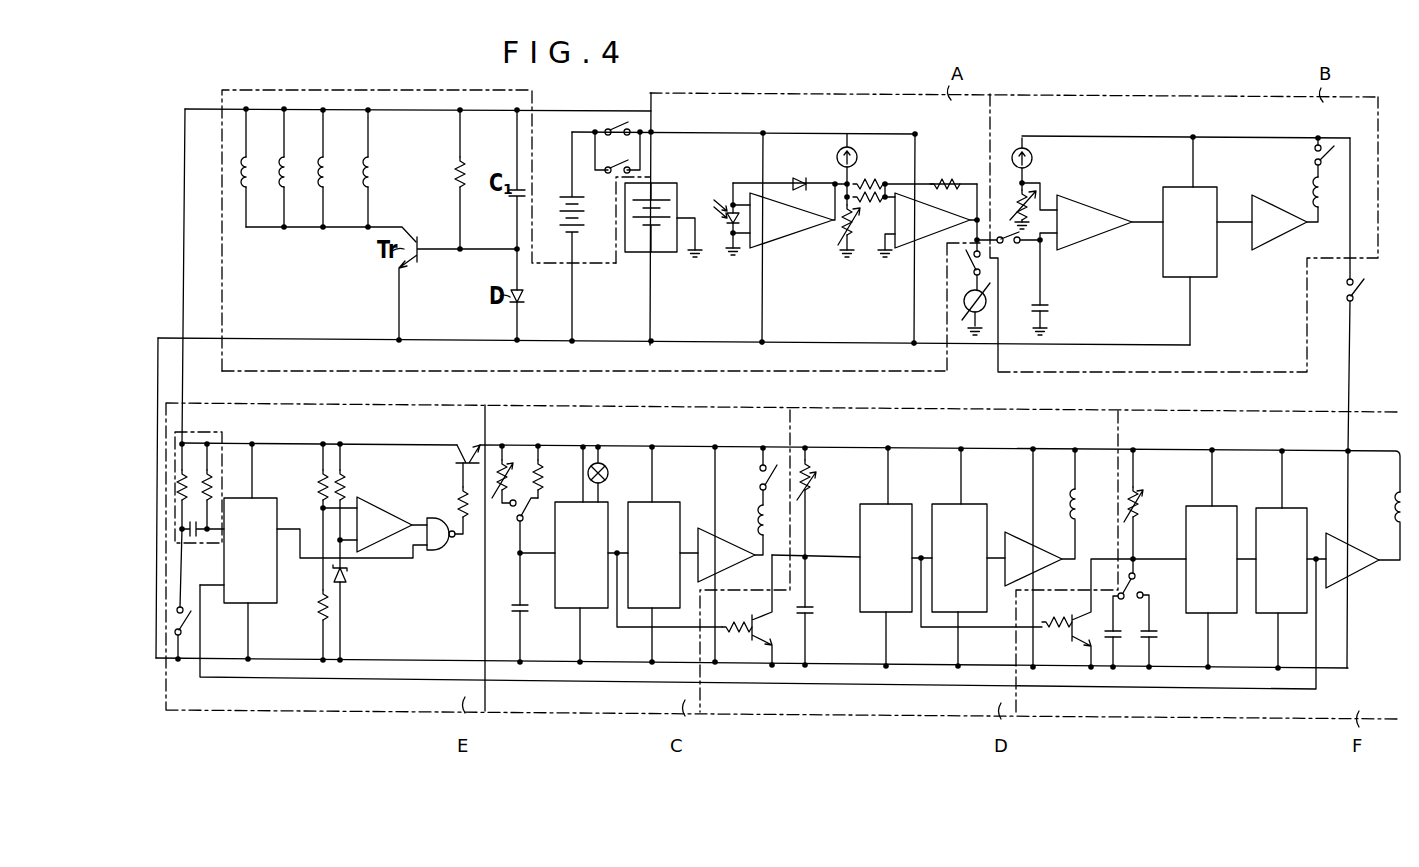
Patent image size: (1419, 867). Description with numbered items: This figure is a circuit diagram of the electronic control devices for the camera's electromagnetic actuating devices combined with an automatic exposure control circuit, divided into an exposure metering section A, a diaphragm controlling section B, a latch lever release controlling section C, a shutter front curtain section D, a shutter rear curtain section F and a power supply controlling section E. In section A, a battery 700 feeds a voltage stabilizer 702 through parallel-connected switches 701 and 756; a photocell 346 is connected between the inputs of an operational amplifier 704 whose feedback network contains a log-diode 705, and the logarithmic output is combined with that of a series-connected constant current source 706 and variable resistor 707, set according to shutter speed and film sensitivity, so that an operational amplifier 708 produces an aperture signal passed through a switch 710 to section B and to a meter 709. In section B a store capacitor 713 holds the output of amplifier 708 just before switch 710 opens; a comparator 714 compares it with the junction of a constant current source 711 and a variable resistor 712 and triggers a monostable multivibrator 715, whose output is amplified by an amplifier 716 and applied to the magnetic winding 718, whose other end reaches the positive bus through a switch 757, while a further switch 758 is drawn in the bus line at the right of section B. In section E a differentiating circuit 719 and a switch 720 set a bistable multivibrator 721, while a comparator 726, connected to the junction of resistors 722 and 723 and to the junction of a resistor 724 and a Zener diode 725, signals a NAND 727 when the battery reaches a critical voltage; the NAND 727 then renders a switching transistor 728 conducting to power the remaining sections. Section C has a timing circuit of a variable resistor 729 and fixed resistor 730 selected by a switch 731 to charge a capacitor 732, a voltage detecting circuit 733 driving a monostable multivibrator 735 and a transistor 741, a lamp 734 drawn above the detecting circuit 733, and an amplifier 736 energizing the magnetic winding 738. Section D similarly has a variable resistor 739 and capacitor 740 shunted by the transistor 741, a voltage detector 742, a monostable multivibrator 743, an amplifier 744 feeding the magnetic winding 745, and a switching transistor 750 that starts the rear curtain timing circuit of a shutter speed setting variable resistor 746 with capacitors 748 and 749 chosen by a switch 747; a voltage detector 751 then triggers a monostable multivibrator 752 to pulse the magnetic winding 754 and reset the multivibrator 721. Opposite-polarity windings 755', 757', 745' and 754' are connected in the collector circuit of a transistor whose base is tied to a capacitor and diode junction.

The magnetic winding 754' is at (270, 168).
The magnetic winding 745' is at (308, 168).
The magnetic winding 755' is at (349, 168).
The magnetic winding 757' is at (393, 168).
The battery 700 is at (570, 208).
The switch 701 is at (617, 147).
The switch 756 is at (617, 219).
The voltage stabilizer 702 is at (662, 183).
The photocell 346 is at (724, 219).
The operational amplifier 704 is at (794, 214).
The log-diode 705 is at (798, 178).
The constant current source 706 is at (857, 163).
The variable resistor 707 is at (831, 229).
The operational amplifier 708 is at (929, 220).
The meter 709 is at (972, 299).
The switch 710 is at (1005, 242).
The constant current source 711 is at (1033, 160).
The variable resistor 712 is at (1025, 206).
The store capacitor 713 is at (1041, 305).
The comparator 714 is at (1110, 222).
The monostable multivibrator 715 is at (1190, 239).
The amplifier 716 is at (1267, 222).
The magnetic winding 718 is at (1305, 188).
The switch 757 is at (1309, 150).
The switch 758 is at (1348, 292).
The differentiating circuit 719 is at (219, 441).
The switch 720 is at (188, 602).
The bistable multivibrator 721 is at (263, 498).
The resistor 722 is at (313, 476).
The resistor 723 is at (310, 585).
The resistor 724 is at (361, 492).
The Zener diode 725 is at (362, 601).
The comparator 726 is at (375, 524).
The NAND 727 is at (453, 522).
The switching transistor 728 is at (465, 452).
The variable resistor 729 is at (510, 460).
The fixed resistor 730 is at (560, 470).
The selector switch 731 is at (514, 527).
The capacitor 732 is at (508, 609).
The voltage detecting circuit 733 is at (621, 554).
The lamp 734 is at (609, 473).
The monostable multivibrator 735 is at (663, 554).
The amplifier 736 is at (730, 555).
The magnetic winding 738 is at (750, 514).
The variable resistor 739 is at (827, 502).
The capacitor 740 is at (827, 612).
The switching transistor 741 is at (765, 630).
The voltage detector 742 is at (951, 557).
The monostable multivibrator 743 is at (968, 557).
The amplifier 744 is at (1040, 553).
The magnetic winding 745 is at (1097, 484).
The shutter speed setting variable resistor 746 is at (1152, 504).
The switch 747 is at (1141, 581).
The timing capacitor 748 is at (1122, 640).
The timing capacitor 749 is at (1157, 636).
The switching transistor 750 is at (1076, 618).
The voltage detector 751 is at (1221, 558).
The monostable multivibrator 752 is at (1291, 559).
The magnetic winding 754 is at (1384, 507).